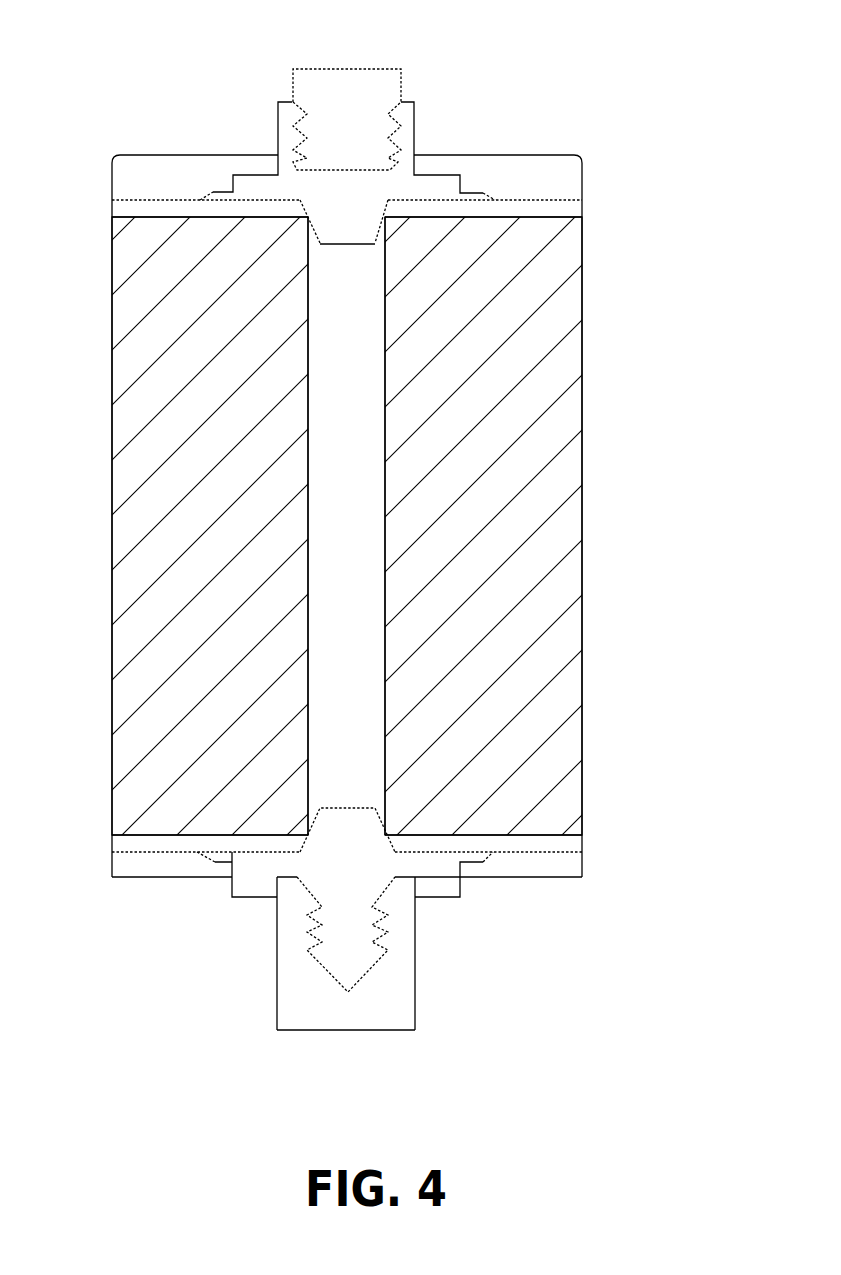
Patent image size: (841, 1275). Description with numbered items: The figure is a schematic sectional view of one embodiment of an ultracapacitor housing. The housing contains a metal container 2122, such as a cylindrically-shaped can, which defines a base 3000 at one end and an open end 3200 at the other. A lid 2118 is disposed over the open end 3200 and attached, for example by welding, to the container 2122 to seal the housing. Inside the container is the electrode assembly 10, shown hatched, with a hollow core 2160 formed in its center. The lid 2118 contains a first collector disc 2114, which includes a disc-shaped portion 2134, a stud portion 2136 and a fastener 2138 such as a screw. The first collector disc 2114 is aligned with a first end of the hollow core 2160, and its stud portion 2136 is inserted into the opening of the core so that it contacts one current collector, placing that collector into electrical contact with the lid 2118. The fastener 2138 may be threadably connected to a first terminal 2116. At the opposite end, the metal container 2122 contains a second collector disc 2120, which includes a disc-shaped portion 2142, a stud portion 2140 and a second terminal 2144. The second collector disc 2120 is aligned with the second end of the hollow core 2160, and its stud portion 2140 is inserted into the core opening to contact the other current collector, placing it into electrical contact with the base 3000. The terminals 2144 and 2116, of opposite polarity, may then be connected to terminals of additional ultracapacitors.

The electrode assembly 10 is at (425, 390).
The base 3000 is at (557, 155).
The metal container 2122 is at (582, 485).
The second collector disc 2120 is at (461, 163).
The second terminal 2144 is at (338, 95).
The disc-shaped portion 2142 is at (228, 185).
The stud portion 2140 is at (342, 218).
The hollow core 2160 is at (370, 557).
The stud portion 2136 is at (340, 830).
The open end 3200 is at (228, 859).
The disc-shaped portion 2134 is at (265, 862).
The first collector disc 2114 is at (392, 862).
The lid 2118 is at (235, 992).
The fastener 2138 is at (387, 933).
The first terminal 2116 is at (323, 1032).